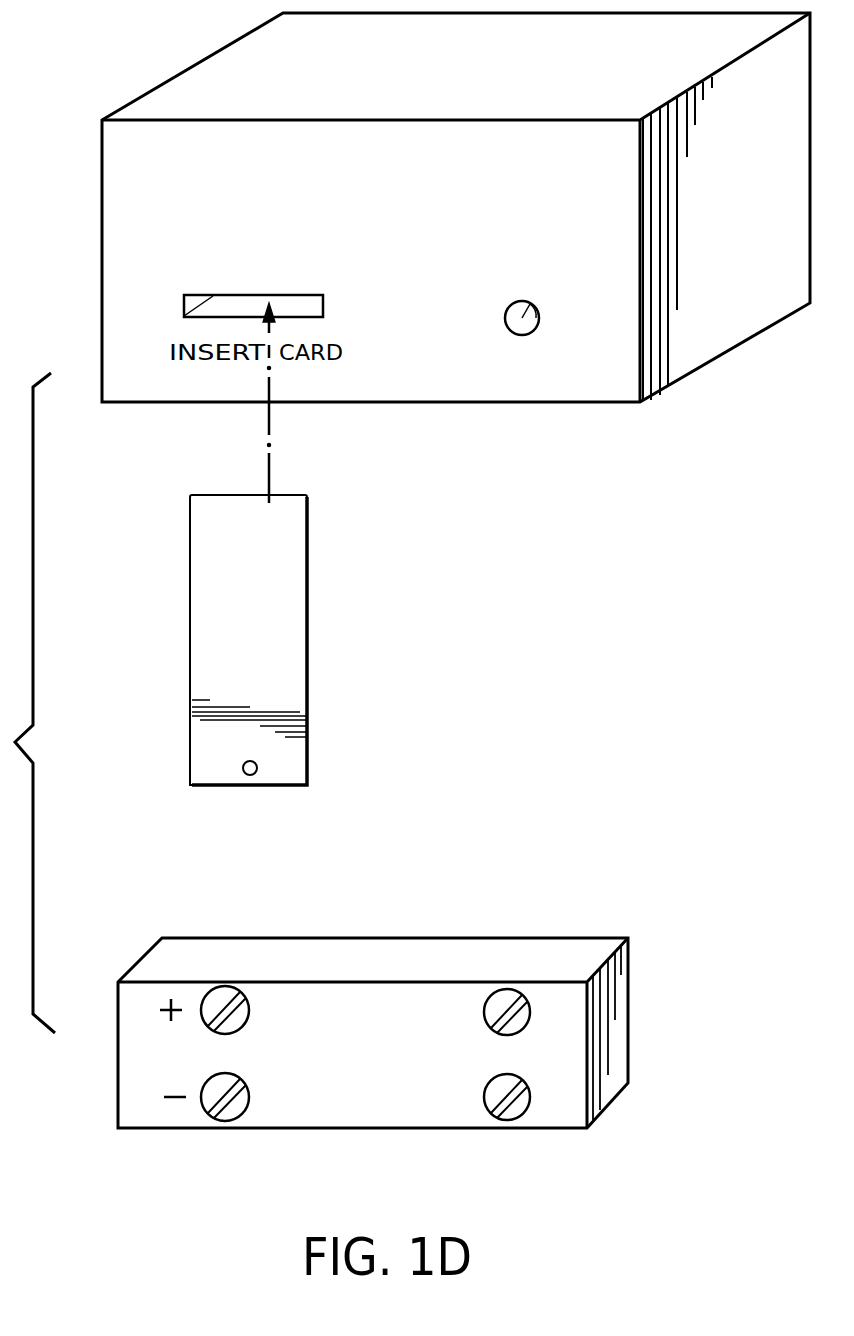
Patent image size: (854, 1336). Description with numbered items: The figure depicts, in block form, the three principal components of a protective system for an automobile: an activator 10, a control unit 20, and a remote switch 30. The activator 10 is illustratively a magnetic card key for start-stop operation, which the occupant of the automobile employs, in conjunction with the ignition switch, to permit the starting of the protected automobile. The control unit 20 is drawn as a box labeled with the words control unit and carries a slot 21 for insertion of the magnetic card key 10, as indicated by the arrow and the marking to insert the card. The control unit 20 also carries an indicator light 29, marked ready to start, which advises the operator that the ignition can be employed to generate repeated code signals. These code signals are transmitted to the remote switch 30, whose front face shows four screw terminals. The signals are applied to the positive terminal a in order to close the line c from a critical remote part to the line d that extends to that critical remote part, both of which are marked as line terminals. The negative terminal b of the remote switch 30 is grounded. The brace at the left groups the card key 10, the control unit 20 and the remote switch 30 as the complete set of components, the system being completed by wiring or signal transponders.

The activator 10 is at (193, 633).
The control unit 20 is at (686, 366).
The slot 21 is at (184, 306).
The indicator light 29 is at (538, 304).
The remote switch 30 is at (423, 1047).
The positive terminal a is at (249, 1026).
The negative terminal b is at (242, 1078).
The line c is at (483, 1012).
The line d is at (483, 1097).